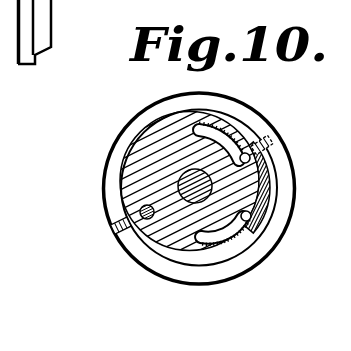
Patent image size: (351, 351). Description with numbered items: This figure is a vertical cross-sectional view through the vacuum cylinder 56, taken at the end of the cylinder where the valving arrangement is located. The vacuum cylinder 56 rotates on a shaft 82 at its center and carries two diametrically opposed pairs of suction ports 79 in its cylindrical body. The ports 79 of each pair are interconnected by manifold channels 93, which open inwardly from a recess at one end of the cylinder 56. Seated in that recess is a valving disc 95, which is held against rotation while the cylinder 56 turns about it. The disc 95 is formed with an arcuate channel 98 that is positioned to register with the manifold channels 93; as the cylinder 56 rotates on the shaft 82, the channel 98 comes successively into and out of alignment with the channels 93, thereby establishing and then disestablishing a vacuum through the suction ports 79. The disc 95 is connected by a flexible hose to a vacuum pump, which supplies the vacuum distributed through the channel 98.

The vacuum cylinder 56 is at (103, 172).
The suction ports 79 is at (274, 139).
The shaft 82 is at (212, 188).
The manifold channels 93 is at (250, 158).
The valving disc 95 is at (163, 260).
The arcuate channel 98 is at (251, 216).